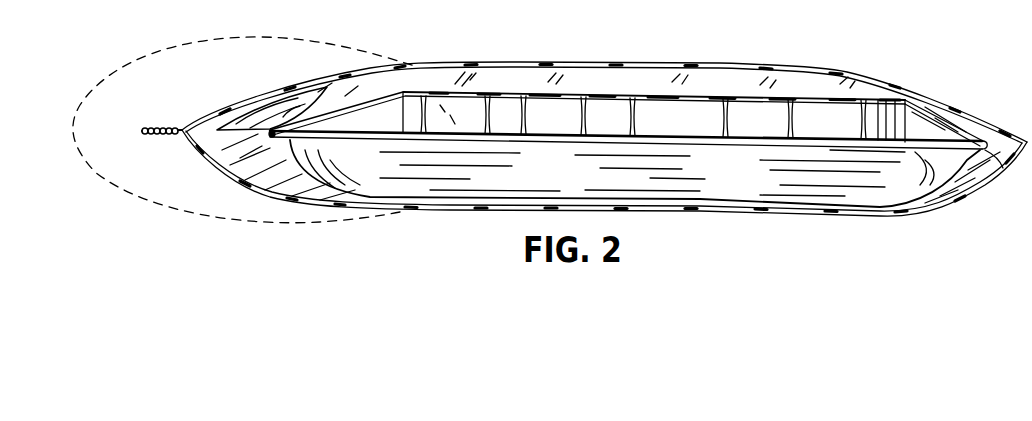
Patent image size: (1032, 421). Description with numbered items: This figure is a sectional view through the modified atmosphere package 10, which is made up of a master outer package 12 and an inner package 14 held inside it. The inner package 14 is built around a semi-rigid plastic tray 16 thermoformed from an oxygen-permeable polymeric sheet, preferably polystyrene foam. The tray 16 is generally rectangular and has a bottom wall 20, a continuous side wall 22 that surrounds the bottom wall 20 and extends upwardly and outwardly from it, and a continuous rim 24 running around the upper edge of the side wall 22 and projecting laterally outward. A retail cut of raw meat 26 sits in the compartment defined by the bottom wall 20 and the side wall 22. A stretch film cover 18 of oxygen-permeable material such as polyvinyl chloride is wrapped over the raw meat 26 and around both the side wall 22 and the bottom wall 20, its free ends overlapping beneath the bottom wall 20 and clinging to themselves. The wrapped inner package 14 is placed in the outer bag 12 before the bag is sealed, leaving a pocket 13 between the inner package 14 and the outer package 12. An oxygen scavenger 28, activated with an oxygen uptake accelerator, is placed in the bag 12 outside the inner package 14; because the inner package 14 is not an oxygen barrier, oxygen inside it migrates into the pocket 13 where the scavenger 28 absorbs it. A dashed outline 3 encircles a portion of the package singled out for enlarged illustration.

The region shown in FIG. 3 is at (174, 42).
The modified atmosphere package 10 is at (956, 59).
The master outer package 12 is at (727, 63).
The pocket 13 is at (793, 82).
The inner package 14 is at (740, 94).
The semi-rigid plastic tray 16 is at (906, 195).
The stretch film cover 18 is at (600, 95).
The bottom wall 20 is at (840, 212).
The continuous side wall 22 is at (755, 182).
The continuous rim 24 is at (952, 136).
The retail cut of raw meat 26 is at (465, 102).
The oxygen scavenger 28 is at (270, 95).